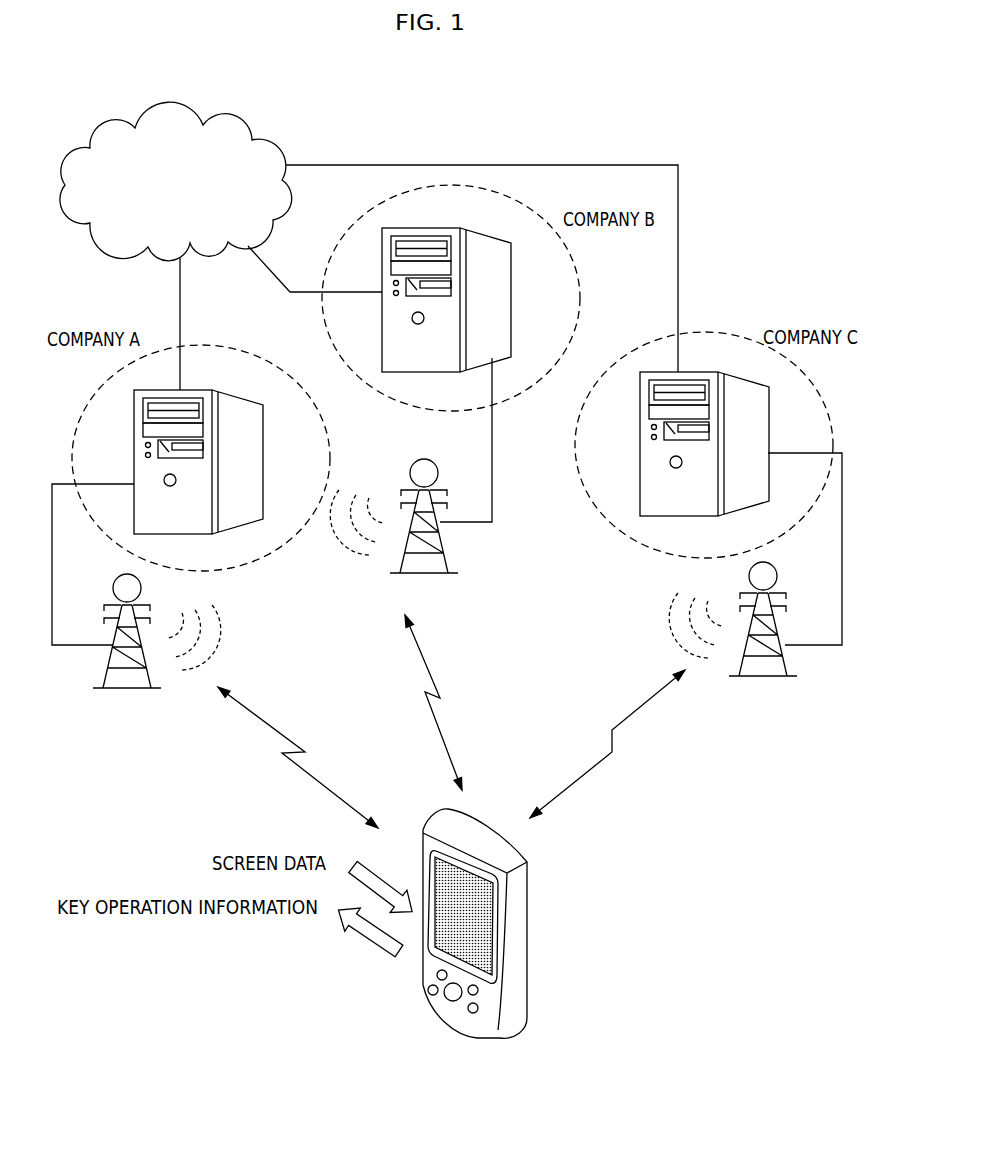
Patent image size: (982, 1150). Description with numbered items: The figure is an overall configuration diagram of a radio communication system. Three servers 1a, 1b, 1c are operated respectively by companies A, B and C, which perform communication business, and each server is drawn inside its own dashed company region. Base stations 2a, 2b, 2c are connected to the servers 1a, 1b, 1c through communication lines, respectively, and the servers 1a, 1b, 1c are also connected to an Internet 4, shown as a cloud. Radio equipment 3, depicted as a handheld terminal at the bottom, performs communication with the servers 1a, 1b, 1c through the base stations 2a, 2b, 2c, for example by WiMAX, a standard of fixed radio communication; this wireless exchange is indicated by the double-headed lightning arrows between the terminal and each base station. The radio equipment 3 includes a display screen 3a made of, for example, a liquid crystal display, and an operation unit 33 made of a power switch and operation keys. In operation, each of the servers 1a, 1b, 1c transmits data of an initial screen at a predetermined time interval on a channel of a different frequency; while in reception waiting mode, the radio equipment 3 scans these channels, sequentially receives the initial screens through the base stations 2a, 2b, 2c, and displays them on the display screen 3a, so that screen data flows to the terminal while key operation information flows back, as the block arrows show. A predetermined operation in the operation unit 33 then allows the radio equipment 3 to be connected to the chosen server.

The Internet 4 is at (238, 112).
The server 1a is at (252, 457).
The server 1b is at (500, 296).
The server 1c is at (748, 423).
The base station 2a is at (118, 697).
The base station 2b is at (438, 577).
The base station 2c is at (765, 682).
The radio equipment 3 is at (528, 907).
The display screen 3a is at (485, 942).
The operation unit 33 is at (450, 1008).